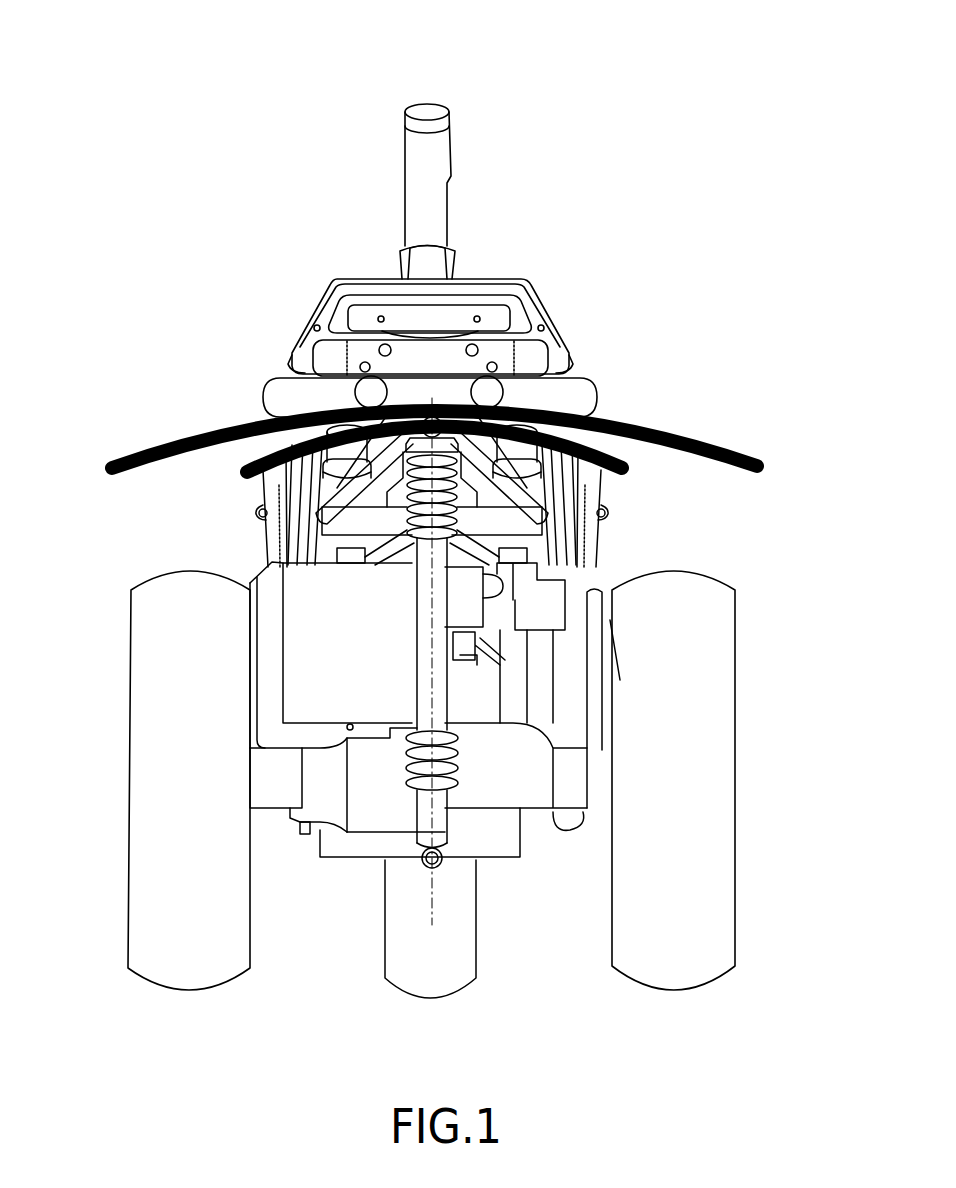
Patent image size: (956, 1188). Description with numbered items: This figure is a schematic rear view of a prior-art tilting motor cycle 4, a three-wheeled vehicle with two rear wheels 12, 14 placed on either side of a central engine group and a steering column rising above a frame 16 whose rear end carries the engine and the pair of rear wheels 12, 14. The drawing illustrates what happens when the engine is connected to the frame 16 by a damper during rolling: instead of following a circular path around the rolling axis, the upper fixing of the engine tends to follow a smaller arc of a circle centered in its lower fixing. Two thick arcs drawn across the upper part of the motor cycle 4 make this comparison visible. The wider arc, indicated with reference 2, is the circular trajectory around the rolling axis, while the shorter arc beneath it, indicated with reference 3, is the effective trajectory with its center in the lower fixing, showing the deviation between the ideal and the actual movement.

The tilting motor cycle 4 is at (500, 109).
The frame 16 is at (458, 279).
The circular trajectory around the rolling axis 2 is at (760, 461).
The effective trajectory with the center in the lower fixing 3 is at (625, 468).
The rear wheel 12 is at (160, 693).
The rear wheel 14 is at (697, 675).